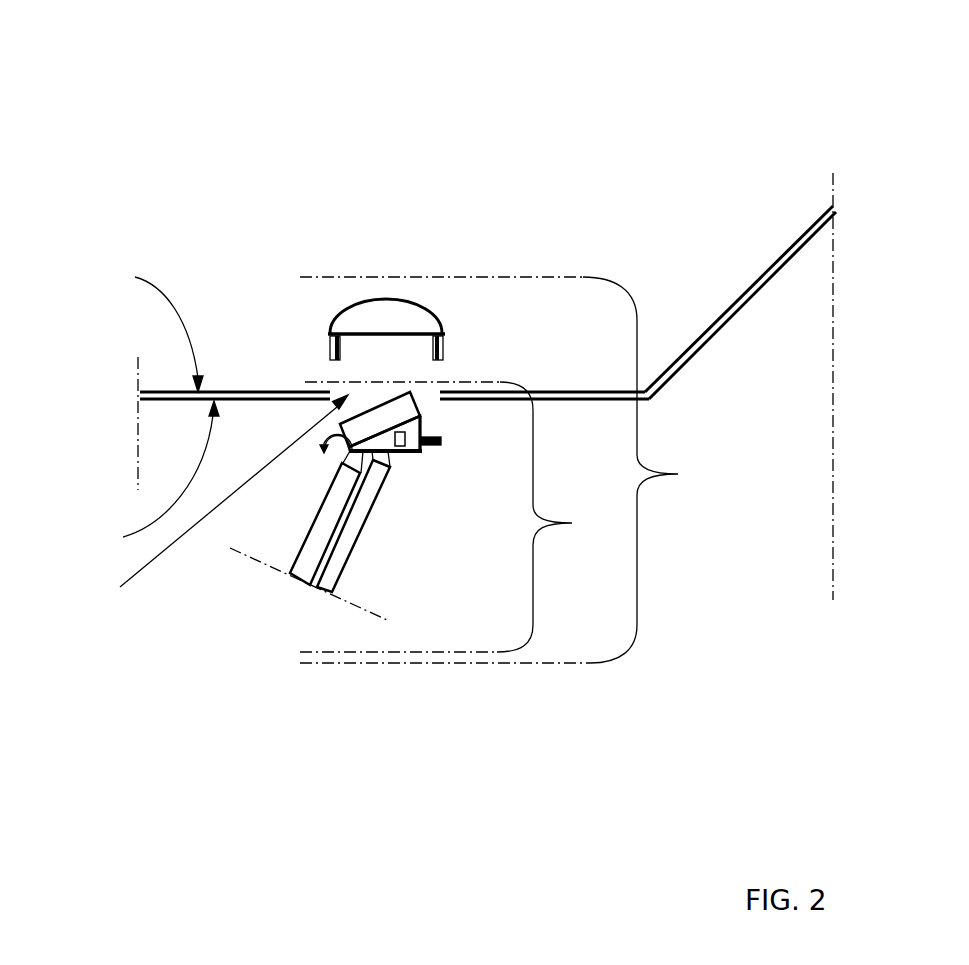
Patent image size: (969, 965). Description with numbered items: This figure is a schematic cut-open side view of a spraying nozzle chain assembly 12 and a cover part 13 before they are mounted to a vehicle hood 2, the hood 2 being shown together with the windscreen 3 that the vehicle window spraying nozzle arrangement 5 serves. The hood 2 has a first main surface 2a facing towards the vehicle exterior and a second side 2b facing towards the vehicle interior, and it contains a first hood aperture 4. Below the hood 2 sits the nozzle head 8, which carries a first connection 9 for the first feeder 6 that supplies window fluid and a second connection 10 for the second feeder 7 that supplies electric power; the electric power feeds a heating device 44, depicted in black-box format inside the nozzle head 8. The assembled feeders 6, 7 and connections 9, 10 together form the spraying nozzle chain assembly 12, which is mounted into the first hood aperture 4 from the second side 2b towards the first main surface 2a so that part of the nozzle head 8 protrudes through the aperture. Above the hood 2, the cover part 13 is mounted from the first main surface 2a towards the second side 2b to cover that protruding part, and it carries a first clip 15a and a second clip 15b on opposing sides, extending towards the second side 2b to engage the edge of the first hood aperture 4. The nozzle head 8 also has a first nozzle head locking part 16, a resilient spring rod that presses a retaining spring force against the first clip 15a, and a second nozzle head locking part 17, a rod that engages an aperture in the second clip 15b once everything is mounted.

The hood 2 is at (259, 392).
The first main surface 2a is at (149, 327).
The second side 2b is at (149, 478).
The windscreen 3 is at (785, 257).
The first hood aperture 4 is at (213, 499).
The vehicle window spraying nozzle arrangement 5 is at (646, 470).
The first feeder 6 is at (363, 460).
The second feeder 7 is at (375, 467).
The nozzle head 8 is at (387, 457).
The first connection 9 is at (340, 463).
The second connection 10 is at (370, 460).
The spraying nozzle chain assembly 12 is at (562, 517).
The cover part 13 is at (391, 320).
The first clip 15a is at (331, 357).
The second clip 15b is at (442, 347).
The first nozzle head locking part 16 is at (326, 443).
The second nozzle head locking part 17 is at (412, 442).
The heating device 44 is at (408, 430).